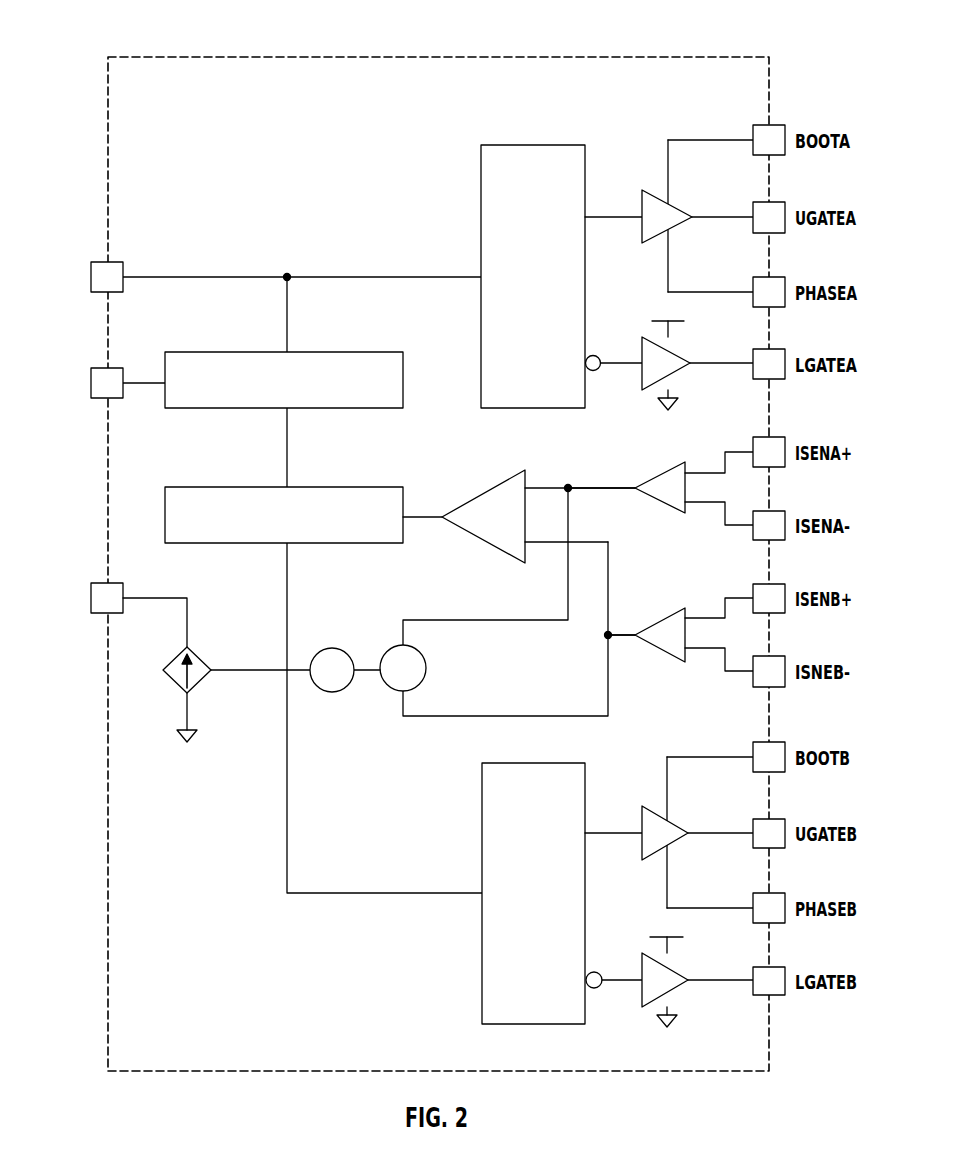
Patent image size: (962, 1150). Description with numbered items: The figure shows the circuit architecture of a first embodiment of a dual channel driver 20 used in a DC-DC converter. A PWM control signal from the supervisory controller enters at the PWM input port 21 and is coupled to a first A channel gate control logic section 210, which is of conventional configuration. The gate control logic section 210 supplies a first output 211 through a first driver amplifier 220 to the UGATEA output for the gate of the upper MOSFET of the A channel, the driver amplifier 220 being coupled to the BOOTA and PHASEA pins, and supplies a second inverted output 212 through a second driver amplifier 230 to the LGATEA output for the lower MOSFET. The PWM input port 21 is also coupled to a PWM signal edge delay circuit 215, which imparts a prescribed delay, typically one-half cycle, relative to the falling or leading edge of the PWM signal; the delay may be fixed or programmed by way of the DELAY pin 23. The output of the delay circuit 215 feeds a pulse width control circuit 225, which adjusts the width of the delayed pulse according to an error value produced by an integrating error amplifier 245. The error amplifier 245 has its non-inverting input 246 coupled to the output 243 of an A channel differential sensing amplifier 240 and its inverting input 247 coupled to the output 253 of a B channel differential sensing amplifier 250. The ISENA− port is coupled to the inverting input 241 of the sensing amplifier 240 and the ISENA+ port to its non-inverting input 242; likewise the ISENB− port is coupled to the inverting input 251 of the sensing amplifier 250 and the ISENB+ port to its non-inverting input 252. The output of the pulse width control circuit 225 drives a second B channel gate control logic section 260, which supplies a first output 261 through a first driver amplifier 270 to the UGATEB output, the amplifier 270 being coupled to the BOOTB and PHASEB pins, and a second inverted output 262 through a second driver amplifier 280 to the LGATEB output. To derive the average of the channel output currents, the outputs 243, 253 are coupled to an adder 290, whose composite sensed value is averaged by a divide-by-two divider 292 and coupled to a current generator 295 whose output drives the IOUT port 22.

The dual channel driver 20 is at (360, 57).
The PWM input port 21 is at (108, 262).
The IOUT port 22 is at (97, 613).
The DELAY pin 23 is at (97, 398).
The A channel gate control logic section 210 is at (508, 145).
The first output 211 is at (590, 216).
The second inverted output 212 is at (601, 371).
The PWM signal edge delay circuit 215 is at (192, 352).
The first driver amplifier 220 is at (674, 204).
The pulse width control circuit 225 is at (297, 487).
The second driver amplifier 230 is at (677, 356).
The A channel differential sensing amplifier 240 is at (661, 470).
The inverting input 241 is at (688, 470).
The non-inverting input 242 is at (690, 508).
The output 243 is at (640, 489).
The integrating error amplifier 245 is at (468, 500).
The non-inverting input 246 is at (528, 487).
The inverting input 247 is at (528, 545).
The B channel differential sensing amplifier 250 is at (650, 648).
The inverting input 251 is at (688, 616).
The non-inverting input 252 is at (690, 652).
The output 253 is at (640, 634).
The B channel gate control logic section 260 is at (482, 946).
The first output 261 is at (588, 832).
The second inverted output 262 is at (598, 988).
The first driver amplifier 270 is at (653, 806).
The second driver amplifier 280 is at (680, 990).
The adder 290 is at (427, 673).
The divide-by-two divider 292 is at (313, 650).
The current generator 295 is at (203, 656).